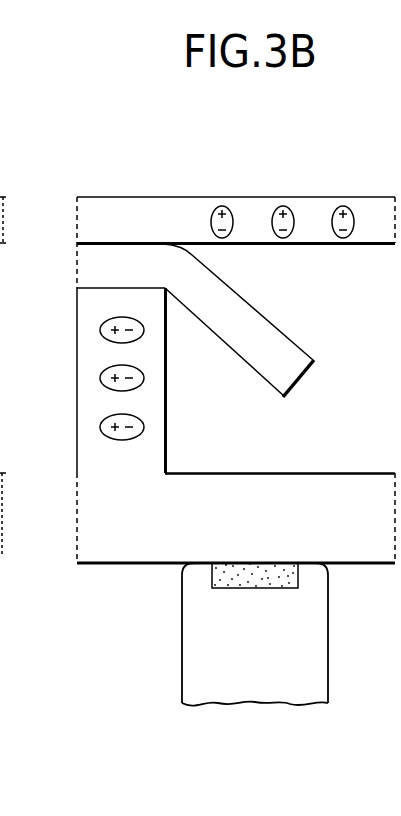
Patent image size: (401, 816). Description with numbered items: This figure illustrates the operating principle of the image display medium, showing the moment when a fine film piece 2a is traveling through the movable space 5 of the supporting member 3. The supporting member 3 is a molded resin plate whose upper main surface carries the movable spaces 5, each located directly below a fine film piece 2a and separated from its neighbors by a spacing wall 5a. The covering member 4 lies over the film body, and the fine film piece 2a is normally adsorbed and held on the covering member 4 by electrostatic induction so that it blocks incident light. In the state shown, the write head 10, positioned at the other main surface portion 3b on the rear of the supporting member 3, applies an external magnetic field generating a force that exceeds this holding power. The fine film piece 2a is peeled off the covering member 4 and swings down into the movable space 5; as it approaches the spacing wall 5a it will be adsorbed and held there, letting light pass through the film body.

The covering member 4 is at (137, 207).
The fine film piece 2a is at (254, 354).
The movable space 5 is at (238, 383).
The spacing wall 5a is at (88, 354).
The supporting member 3 is at (201, 482).
The other main surface portion 3b is at (127, 575).
The write head 10 is at (313, 643).